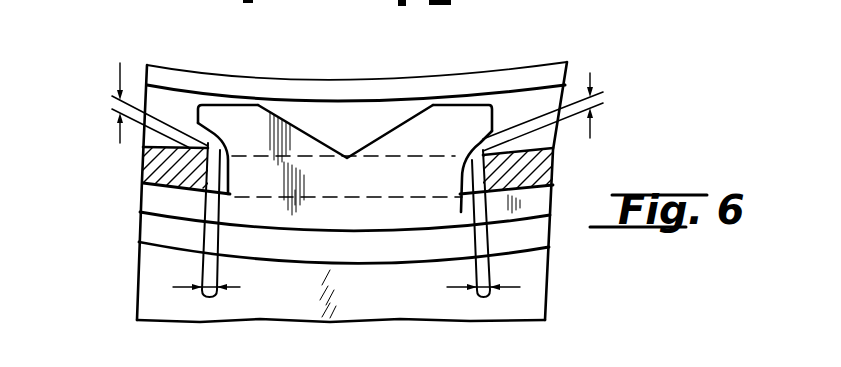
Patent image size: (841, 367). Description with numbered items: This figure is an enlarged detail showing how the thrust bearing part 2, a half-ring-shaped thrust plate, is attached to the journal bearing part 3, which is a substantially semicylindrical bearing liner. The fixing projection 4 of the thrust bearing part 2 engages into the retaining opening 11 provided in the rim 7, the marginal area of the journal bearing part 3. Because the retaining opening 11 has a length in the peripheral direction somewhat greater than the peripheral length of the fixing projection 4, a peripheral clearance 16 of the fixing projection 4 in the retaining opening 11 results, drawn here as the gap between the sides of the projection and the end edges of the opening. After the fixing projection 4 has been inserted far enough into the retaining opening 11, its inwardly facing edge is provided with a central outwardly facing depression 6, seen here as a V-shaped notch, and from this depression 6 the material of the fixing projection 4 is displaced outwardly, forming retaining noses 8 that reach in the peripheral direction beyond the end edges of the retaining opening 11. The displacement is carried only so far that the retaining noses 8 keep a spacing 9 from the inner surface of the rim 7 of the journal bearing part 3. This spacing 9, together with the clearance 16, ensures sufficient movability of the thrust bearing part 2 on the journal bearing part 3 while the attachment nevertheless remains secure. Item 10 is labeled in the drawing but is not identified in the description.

The thrust bearing part 2 is at (559, 271).
The journal bearing part 3 is at (451, 67).
The fixing projection 4 is at (393, 189).
The depression 6 is at (307, 122).
The rim 7 is at (537, 170).
The retaining noses 8 is at (225, 118).
The spacing 9 is at (113, 97).
The top land 10 is at (394, 69).
The retaining opening 11 is at (464, 159).
The peripheral clearance 16 is at (202, 297).